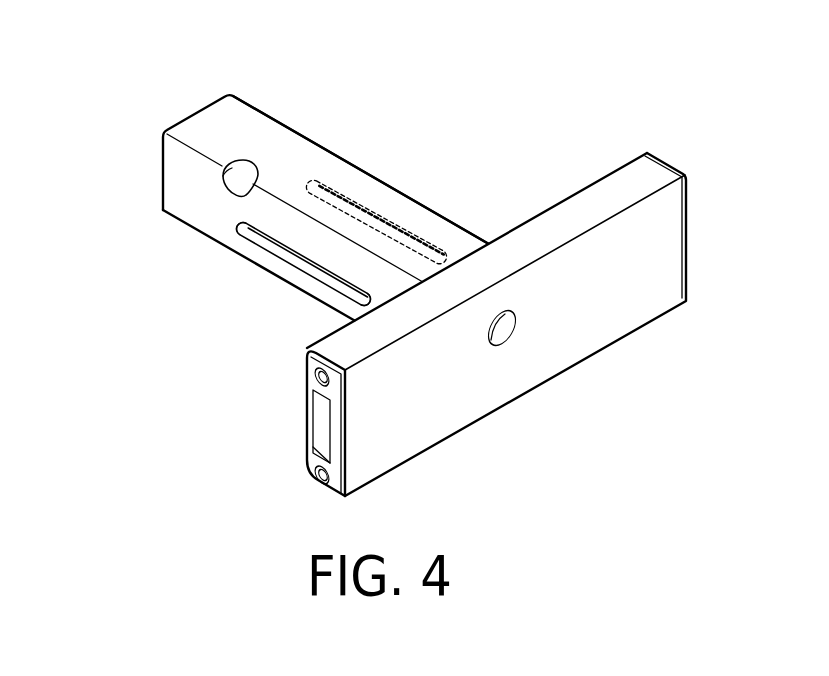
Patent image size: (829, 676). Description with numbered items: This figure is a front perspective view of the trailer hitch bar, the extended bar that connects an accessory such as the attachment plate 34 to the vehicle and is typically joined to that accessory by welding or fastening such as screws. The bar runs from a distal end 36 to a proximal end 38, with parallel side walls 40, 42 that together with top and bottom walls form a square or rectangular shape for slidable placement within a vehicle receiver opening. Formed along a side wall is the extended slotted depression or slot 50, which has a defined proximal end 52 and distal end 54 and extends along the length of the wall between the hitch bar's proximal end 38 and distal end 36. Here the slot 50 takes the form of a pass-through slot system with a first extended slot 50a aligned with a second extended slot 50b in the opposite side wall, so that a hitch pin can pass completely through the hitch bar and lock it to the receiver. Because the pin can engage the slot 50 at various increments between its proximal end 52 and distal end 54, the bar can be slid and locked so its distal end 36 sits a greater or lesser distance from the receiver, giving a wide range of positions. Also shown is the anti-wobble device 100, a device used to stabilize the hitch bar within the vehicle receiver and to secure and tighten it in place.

The attachment plate 34 is at (647, 305).
The distal end 36 is at (180, 121).
The proximal end 38 is at (463, 258).
The side wall 40 is at (176, 171).
The side wall 42 is at (272, 117).
The slot 50 is at (303, 265).
The first extended slot 50a is at (267, 245).
The second extended slot 50b is at (350, 190).
The proximal end 52 is at (347, 297).
The distal end 54 is at (233, 222).
The anti-wobble device 100 is at (237, 170).